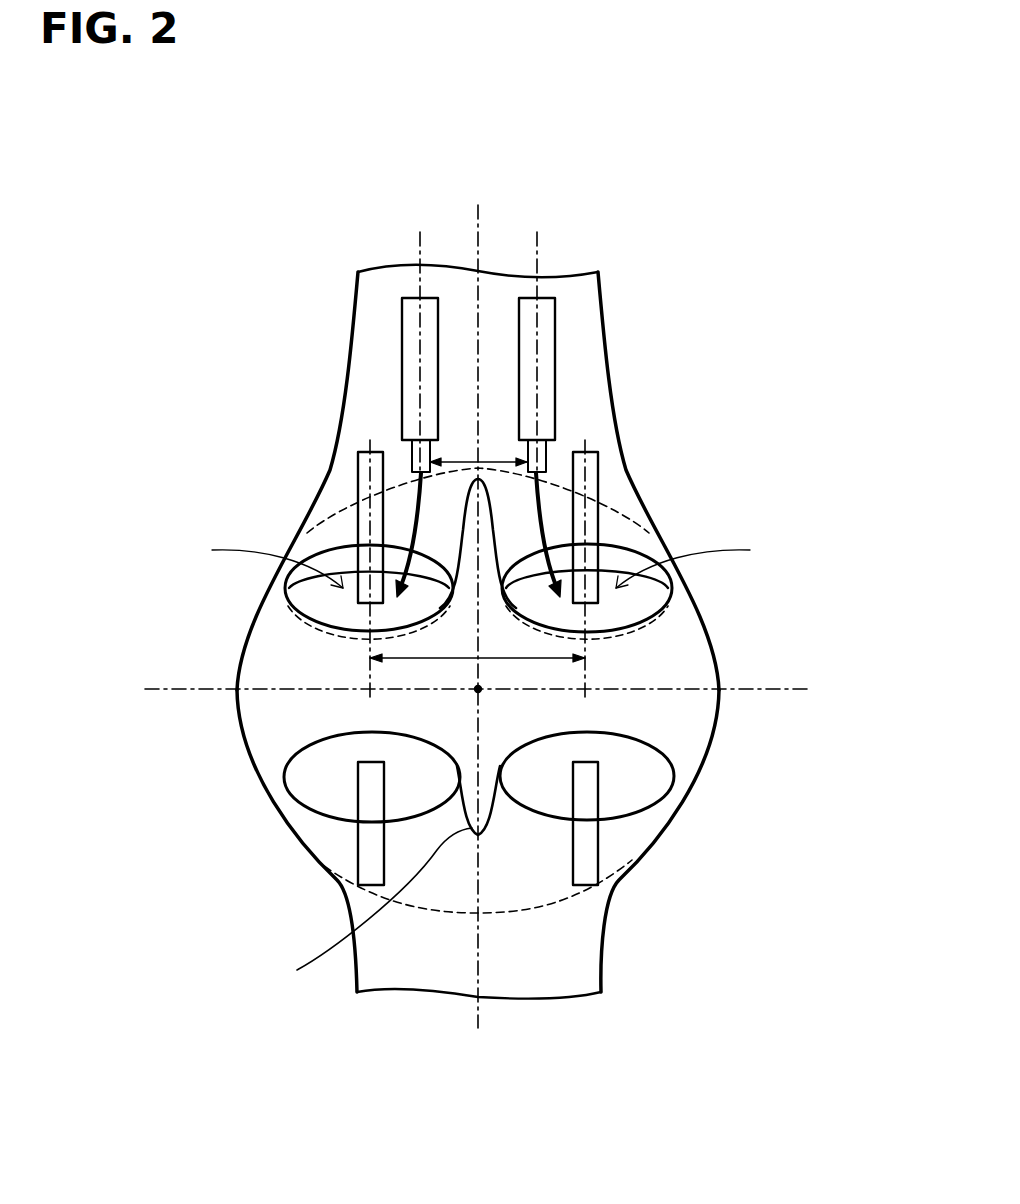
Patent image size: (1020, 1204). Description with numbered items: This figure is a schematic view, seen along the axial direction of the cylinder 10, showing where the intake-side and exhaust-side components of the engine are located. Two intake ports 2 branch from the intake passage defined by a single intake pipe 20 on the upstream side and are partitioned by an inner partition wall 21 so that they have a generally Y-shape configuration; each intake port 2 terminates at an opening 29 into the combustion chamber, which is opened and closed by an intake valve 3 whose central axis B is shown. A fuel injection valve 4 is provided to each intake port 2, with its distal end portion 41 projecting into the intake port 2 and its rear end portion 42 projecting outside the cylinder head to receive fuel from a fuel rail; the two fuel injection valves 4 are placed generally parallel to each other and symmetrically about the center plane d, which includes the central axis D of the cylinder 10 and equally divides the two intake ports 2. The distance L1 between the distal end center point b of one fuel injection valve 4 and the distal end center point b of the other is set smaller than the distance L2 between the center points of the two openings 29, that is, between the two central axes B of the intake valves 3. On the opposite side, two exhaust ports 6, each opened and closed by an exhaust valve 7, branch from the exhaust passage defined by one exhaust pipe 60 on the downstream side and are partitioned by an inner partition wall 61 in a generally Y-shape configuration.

The intake port 2 is at (317, 511).
The intake valve 3 is at (347, 600).
The fuel injection valve 4 is at (410, 368).
The exhaust port 6 is at (314, 838).
The exhaust valve 7 is at (326, 788).
The cylinder 10 is at (710, 644).
The intake pipe 20 is at (577, 318).
The inner partition wall 21 is at (497, 537).
The opening 29 is at (479, 562).
The distal end portion 41 is at (377, 483).
The rear end portion 42 is at (418, 297).
The exhaust pipe 60 is at (603, 967).
The inner partition wall 61 is at (445, 906).
The central axis of the intake valve B is at (370, 640).
The central axis of the cylinder D is at (483, 691).
The center plane d is at (478, 232).
The distal end center point b is at (428, 476).
The distance between distal end center points L1 is at (478, 451).
The distance between opening center points L2 is at (477, 670).